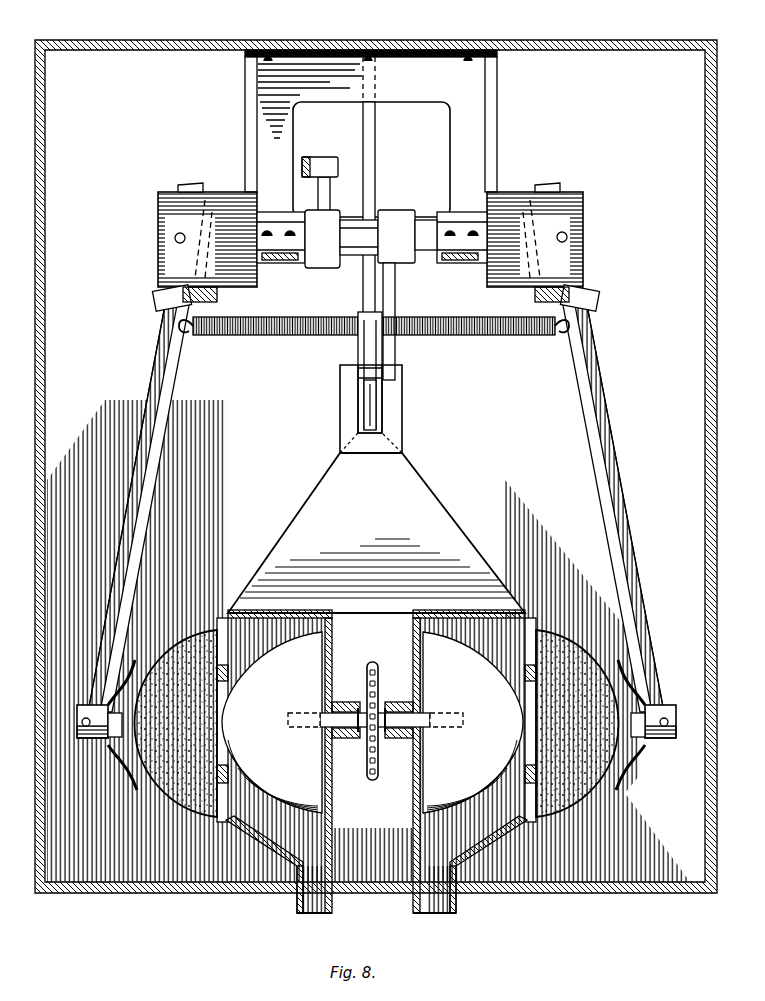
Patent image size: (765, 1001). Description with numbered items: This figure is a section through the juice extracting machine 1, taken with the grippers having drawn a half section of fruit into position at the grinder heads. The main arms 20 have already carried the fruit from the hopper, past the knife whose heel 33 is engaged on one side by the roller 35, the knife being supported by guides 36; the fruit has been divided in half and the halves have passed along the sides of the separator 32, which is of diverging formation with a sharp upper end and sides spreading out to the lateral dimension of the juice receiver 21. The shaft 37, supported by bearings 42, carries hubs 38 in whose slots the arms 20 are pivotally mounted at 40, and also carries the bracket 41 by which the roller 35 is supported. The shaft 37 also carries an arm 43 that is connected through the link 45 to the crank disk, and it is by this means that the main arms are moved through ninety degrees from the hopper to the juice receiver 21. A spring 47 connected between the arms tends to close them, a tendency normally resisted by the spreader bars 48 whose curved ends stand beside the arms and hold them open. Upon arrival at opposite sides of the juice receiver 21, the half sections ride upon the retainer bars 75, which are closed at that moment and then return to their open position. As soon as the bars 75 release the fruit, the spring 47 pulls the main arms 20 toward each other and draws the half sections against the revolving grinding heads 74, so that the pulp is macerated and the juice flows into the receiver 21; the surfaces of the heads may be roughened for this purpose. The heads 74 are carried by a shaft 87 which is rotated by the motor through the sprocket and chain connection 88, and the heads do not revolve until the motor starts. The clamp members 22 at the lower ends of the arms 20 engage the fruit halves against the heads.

The frame casing 1 is at (140, 38).
The main arms 20 is at (145, 470).
The juice receiver 21 is at (515, 606).
The yoke clamp 22 is at (112, 760).
The separator 32 is at (420, 530).
The heel 33 is at (364, 408).
The roller 35 is at (360, 382).
The guides 36 is at (395, 406).
The shaft 37 is at (430, 255).
The hubs 38 is at (160, 192).
The pivot 40 is at (175, 238).
The bracket 41 is at (404, 263).
The bearings 42 is at (277, 220).
The arm 43 is at (322, 268).
The link 45 is at (318, 158).
The spring 47 is at (472, 336).
The spreader bars 48 is at (208, 302).
The grinding heads 74 is at (235, 850).
The retainer bars 75 is at (205, 640).
The shaft 87 is at (342, 712).
The sprocket and chain connection 88 is at (370, 778).